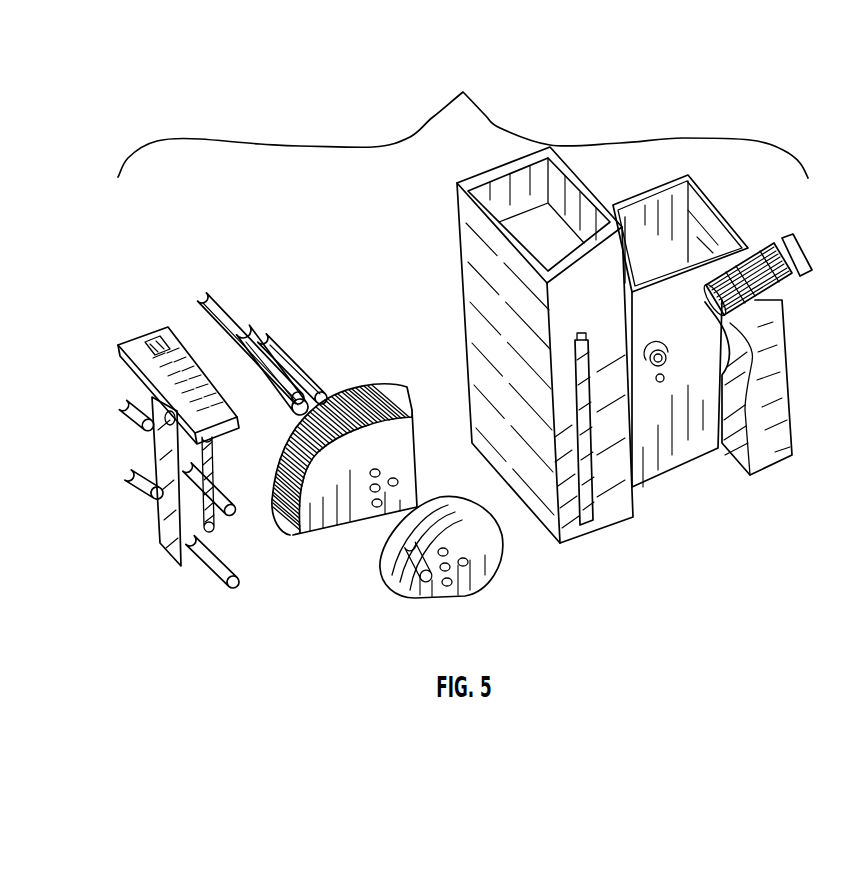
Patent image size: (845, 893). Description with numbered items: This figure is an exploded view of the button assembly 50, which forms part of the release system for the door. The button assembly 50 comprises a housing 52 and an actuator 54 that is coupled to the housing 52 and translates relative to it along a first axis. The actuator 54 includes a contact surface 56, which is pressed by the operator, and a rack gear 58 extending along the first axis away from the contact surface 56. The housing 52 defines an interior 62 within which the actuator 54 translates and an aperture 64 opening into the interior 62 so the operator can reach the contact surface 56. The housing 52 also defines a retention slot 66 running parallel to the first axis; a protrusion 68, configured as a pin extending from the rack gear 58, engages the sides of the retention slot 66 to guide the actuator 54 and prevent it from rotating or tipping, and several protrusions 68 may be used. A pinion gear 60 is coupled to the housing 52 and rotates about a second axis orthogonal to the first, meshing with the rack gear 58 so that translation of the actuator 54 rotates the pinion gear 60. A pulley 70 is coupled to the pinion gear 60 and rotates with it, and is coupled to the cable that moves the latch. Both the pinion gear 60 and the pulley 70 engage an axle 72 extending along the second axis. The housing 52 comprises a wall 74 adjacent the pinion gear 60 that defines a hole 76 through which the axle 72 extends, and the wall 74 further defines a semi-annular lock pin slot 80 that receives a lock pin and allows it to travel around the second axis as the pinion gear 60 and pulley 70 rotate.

The button assembly 50 is at (728, 77).
The housing 52 is at (468, 265).
The actuator 54 is at (143, 342).
The contact surface 56 is at (157, 342).
The rack gear 58 is at (160, 537).
The pinion gear 60 is at (367, 383).
The interior 62 is at (643, 203).
The aperture 64 is at (517, 167).
The retention slot 66 is at (593, 517).
The protrusion 68 is at (130, 472).
The pulley 70 is at (467, 583).
The axle 72 is at (220, 302).
The wall 74 is at (732, 250).
The hole 76 is at (253, 330).
The lock pin slot 80 is at (662, 343).